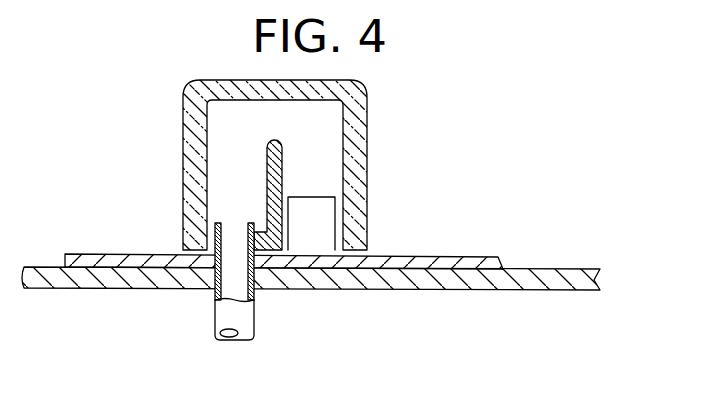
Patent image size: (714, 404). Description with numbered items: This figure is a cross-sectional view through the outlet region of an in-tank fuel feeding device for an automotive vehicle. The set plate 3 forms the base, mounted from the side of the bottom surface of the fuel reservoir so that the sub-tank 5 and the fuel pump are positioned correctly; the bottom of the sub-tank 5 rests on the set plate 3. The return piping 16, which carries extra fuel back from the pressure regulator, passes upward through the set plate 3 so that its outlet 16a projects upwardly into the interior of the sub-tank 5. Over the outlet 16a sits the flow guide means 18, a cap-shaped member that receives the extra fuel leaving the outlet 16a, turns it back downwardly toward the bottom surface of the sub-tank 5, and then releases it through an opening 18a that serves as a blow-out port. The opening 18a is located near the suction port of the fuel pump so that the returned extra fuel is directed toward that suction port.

The set plate 3 is at (533, 291).
The sub-tank 5 is at (448, 257).
The return piping 16 is at (253, 310).
The outlet 16a is at (235, 222).
The flow guide means 18 is at (367, 137).
The opening 18a is at (323, 218).